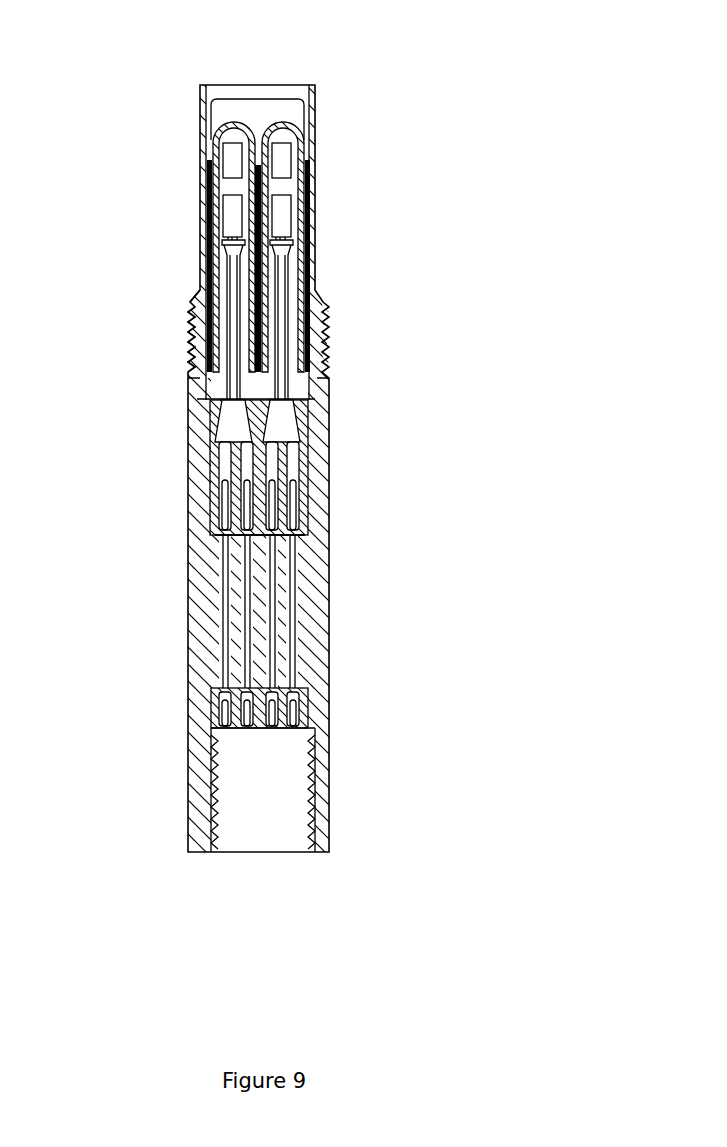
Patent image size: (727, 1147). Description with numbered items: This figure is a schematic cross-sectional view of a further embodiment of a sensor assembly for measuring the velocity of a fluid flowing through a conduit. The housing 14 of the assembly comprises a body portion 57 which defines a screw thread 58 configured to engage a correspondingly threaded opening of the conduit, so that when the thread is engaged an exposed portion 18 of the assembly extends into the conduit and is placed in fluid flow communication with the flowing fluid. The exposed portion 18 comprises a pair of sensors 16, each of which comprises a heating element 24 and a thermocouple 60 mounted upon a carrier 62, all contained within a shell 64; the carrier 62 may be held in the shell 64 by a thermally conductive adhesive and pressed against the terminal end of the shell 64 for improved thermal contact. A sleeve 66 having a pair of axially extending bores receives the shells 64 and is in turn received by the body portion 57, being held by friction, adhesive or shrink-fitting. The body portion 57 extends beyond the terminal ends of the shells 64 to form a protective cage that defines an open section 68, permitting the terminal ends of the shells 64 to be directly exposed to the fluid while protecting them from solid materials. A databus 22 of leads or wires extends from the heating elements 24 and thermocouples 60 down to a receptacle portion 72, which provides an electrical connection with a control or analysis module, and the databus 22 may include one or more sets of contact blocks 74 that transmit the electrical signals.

The housing 14 is at (172, 391).
The sensors 16 is at (226, 108).
The exposed portion 18 is at (558, 80).
The databus 22 is at (308, 385).
The heating element 24 is at (232, 152).
The body portion 57 is at (195, 300).
The screw thread 58 is at (190, 338).
The thermocouple 60 is at (233, 218).
The carrier 62 is at (230, 187).
The shell 64 is at (218, 120).
The sleeve 66 is at (305, 260).
The open section 68 is at (257, 117).
The receptacle portion 72 is at (285, 807).
The contact blocks 74 is at (213, 478).